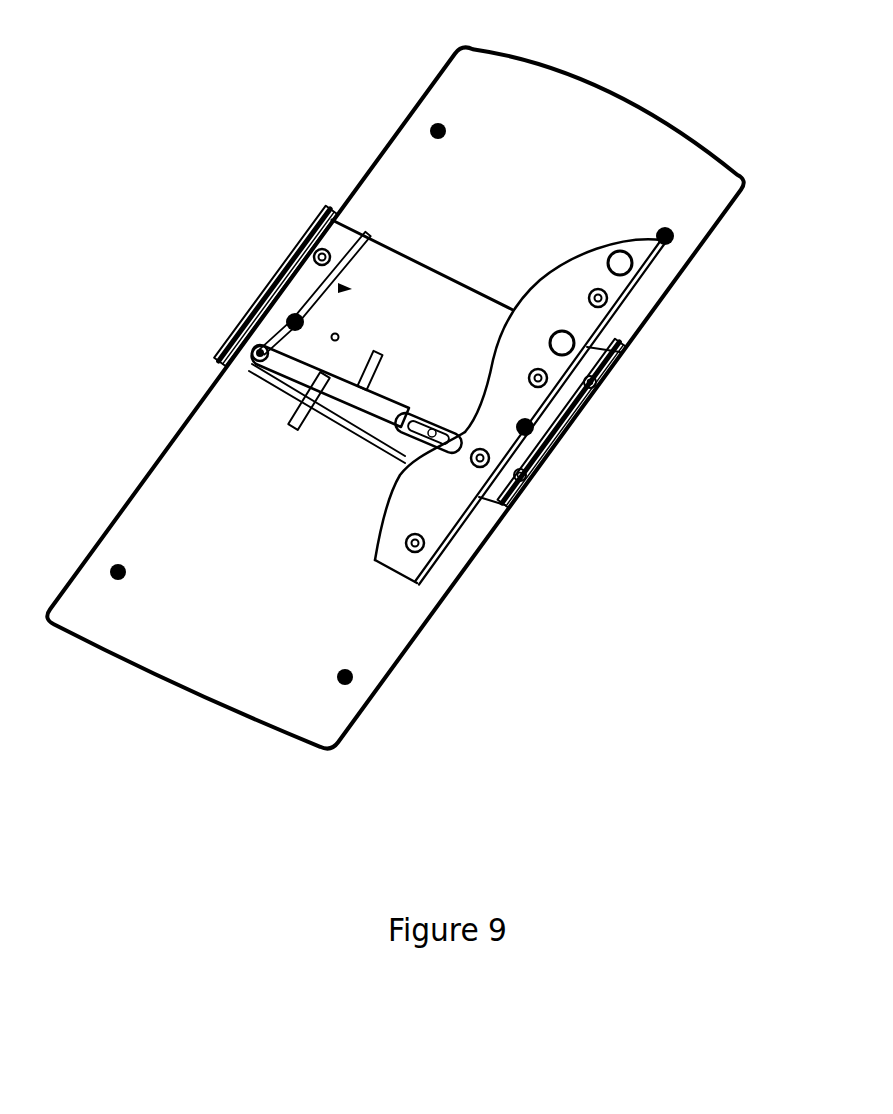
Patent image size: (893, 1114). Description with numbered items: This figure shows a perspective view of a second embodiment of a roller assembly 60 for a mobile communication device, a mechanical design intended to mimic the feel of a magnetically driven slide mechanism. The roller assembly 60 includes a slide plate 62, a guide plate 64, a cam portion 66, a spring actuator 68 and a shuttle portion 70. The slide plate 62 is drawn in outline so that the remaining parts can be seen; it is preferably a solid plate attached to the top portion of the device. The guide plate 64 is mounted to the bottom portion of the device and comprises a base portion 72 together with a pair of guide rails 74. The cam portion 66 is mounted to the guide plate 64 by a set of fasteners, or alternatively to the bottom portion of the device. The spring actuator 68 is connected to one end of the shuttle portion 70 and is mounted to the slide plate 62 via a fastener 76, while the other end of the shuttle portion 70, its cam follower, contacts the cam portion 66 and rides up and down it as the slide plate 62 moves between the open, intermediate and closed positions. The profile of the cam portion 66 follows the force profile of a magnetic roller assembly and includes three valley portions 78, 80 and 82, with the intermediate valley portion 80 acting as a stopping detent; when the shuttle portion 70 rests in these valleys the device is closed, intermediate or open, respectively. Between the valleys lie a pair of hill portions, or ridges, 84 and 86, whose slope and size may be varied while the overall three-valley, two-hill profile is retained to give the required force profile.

The roller assembly 60 is at (190, 137).
The slide plate 62 is at (332, 723).
The guide plate 64 is at (323, 280).
The cam portion 66 is at (620, 288).
The spring actuator 68 is at (294, 390).
The shuttle portion 70 is at (410, 442).
The base portion 72 is at (455, 278).
The guide rails 74 is at (265, 293).
The fastener 76 is at (256, 357).
The valley portion 78 is at (384, 543).
The intermediate valley portion 80 is at (526, 432).
The valley portion 82 is at (648, 230).
The hill portion 84 is at (392, 482).
The hill portion 86 is at (556, 270).